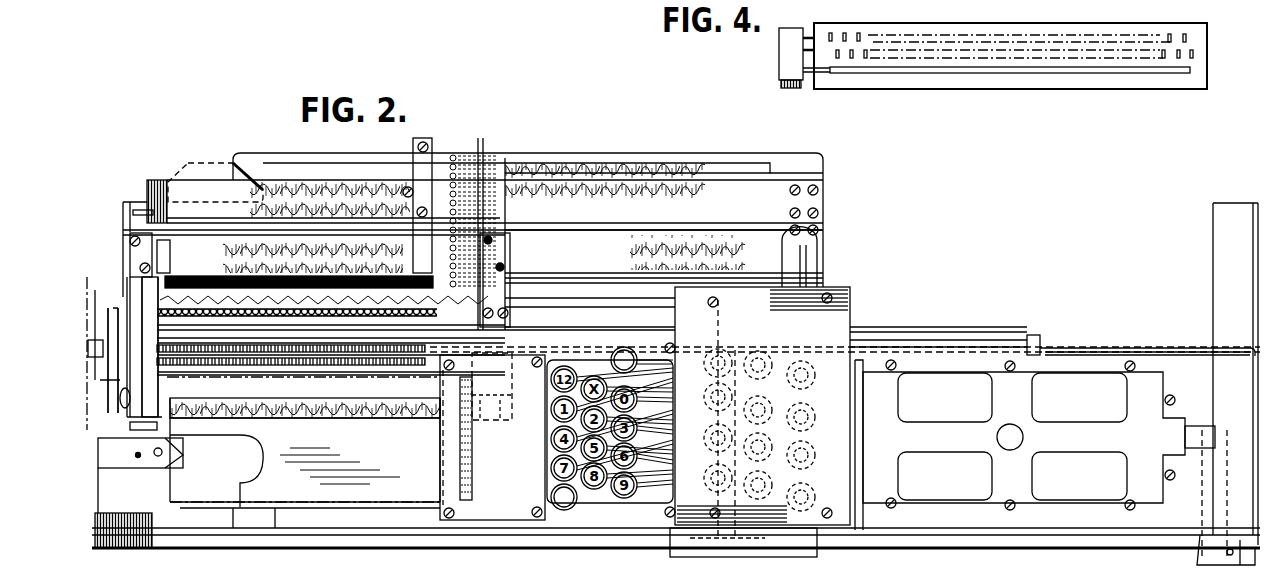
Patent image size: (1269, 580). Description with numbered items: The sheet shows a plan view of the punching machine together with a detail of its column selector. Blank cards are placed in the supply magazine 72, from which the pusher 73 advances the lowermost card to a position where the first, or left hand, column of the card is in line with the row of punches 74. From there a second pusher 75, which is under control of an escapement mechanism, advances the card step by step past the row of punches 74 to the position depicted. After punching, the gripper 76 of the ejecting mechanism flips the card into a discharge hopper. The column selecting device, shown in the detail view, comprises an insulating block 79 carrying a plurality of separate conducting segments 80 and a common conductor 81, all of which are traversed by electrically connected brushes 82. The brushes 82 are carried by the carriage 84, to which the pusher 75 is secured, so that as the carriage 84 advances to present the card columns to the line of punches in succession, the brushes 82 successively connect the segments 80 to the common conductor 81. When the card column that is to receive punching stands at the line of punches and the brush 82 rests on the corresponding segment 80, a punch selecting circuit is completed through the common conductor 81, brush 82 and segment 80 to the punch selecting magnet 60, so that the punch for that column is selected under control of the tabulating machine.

In FIG. 2, the punch selecting magnet 60 is at (796, 372).
In FIG. 2, the supply magazine 72 is at (1067, 383).
In FIG. 2, the pusher 73 is at (1192, 425).
In FIG. 2, the row of punches 74 is at (474, 470).
In FIG. 2, the pusher 75 is at (505, 405).
In FIG. 2, the gripper 76 is at (180, 458).
In FIG. 4, the insulating block 79 is at (1041, 78).
In FIG. 2, the insulating block 79 is at (348, 278).
In FIG. 4, the conducting segments 80 is at (868, 53).
In FIG. 4, the common conductor 81 is at (912, 70).
In FIG. 4, the brushes 82 is at (792, 67).
In FIG. 2, the brushes 82 is at (150, 300).
In FIG. 2, the carriage 84 is at (152, 333).